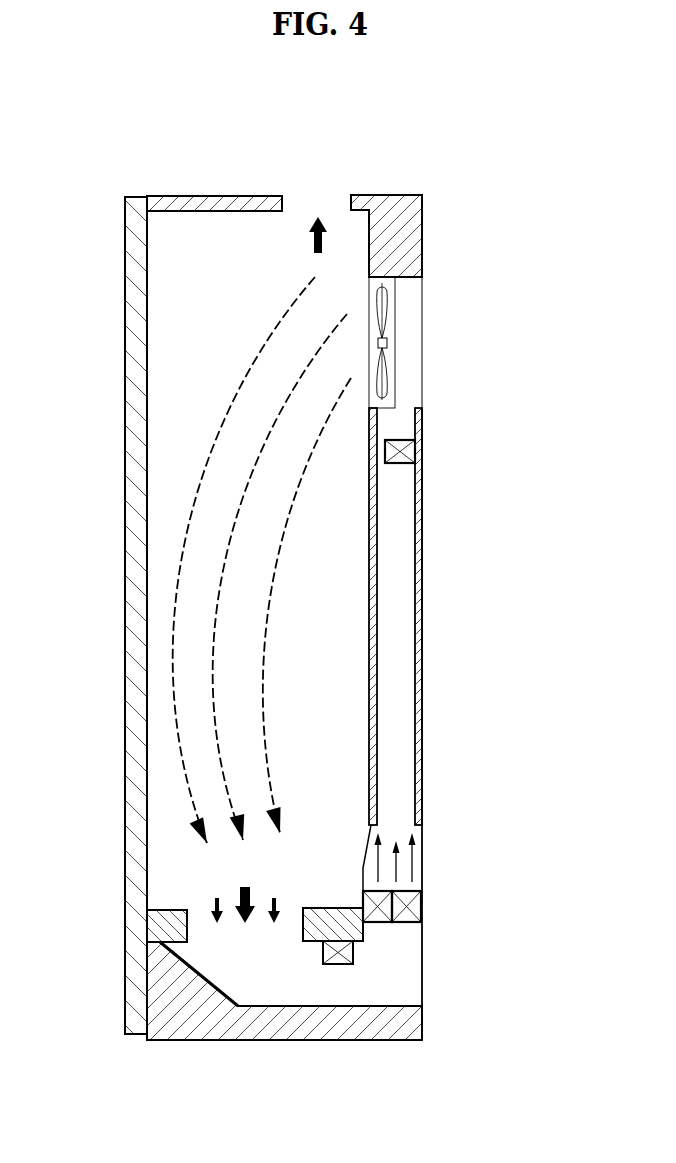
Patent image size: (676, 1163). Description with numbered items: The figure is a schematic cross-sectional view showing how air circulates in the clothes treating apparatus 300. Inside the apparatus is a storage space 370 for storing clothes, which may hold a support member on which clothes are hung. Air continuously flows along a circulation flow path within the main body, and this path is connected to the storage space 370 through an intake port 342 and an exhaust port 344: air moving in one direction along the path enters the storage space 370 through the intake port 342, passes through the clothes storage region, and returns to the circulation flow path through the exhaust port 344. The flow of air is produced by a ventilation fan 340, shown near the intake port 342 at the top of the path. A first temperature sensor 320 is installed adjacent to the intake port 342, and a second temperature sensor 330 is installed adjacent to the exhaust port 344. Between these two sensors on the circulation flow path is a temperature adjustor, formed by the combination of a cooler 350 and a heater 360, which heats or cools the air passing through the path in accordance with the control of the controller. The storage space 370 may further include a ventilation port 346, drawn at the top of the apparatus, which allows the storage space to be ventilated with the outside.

The clothes treating apparatus 300 is at (438, 158).
The first temperature sensor 320 is at (420, 450).
The second temperature sensor 330 is at (338, 958).
The ventilation fan 340 is at (427, 342).
The intake port 342 is at (365, 340).
The exhaust port 344 is at (261, 934).
The ventilation port 346 is at (333, 198).
The cooler 350 is at (377, 918).
The heater 360 is at (418, 906).
The storage space 370 is at (340, 603).